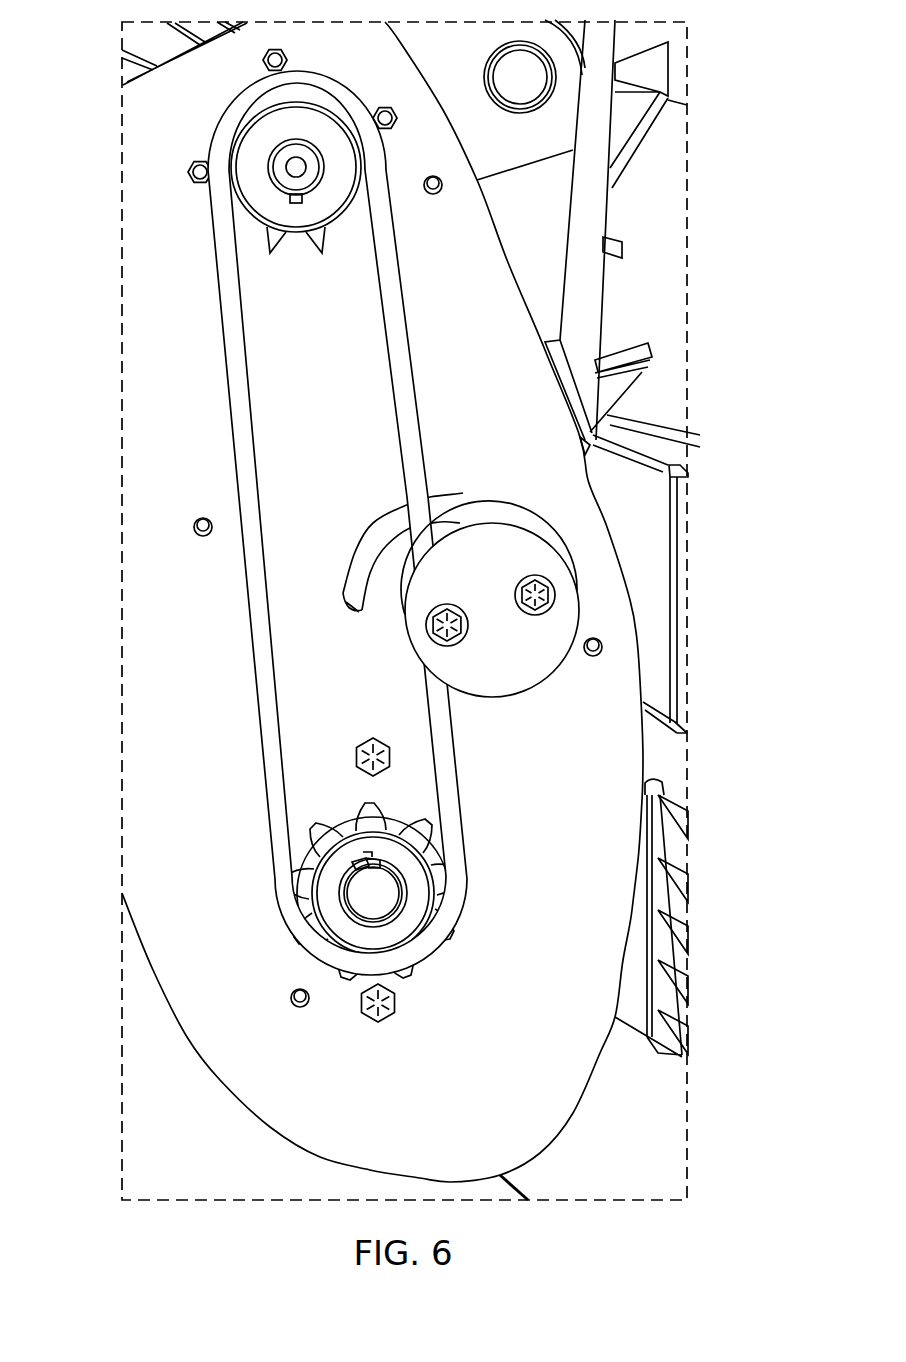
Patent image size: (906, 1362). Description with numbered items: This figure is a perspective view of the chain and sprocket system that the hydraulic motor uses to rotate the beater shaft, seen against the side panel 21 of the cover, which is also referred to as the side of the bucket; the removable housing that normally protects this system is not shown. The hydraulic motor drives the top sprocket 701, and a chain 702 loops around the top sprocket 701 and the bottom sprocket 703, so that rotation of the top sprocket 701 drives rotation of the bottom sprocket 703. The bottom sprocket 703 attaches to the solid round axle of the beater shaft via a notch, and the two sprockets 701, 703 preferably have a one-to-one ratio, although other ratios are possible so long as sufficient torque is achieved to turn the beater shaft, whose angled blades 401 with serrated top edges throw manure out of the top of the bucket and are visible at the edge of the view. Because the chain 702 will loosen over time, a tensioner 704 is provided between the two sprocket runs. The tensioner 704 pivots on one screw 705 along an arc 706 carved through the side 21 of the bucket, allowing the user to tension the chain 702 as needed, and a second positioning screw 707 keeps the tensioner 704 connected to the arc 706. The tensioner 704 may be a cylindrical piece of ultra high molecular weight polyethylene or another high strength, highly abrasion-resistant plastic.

The side panel 21 is at (163, 315).
The blade 401 is at (635, 943).
The top sprocket 701 is at (258, 192).
The chain 702 is at (242, 495).
The bottom sprocket 703 is at (328, 893).
The tensioner 704 is at (537, 653).
The screw 705 is at (443, 613).
The arc 706 is at (353, 580).
The second positioning screw 707 is at (537, 590).